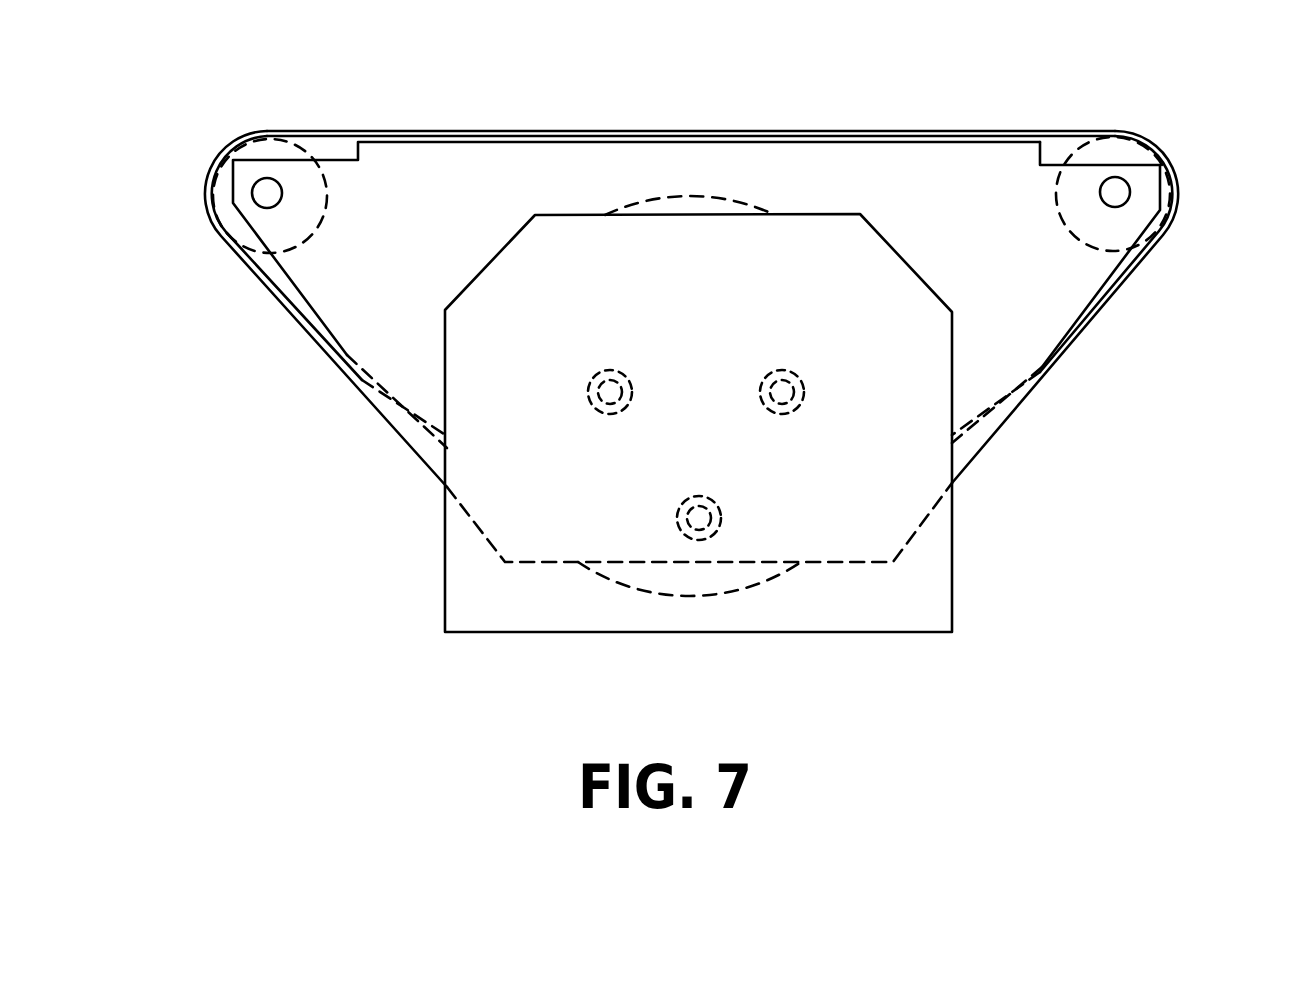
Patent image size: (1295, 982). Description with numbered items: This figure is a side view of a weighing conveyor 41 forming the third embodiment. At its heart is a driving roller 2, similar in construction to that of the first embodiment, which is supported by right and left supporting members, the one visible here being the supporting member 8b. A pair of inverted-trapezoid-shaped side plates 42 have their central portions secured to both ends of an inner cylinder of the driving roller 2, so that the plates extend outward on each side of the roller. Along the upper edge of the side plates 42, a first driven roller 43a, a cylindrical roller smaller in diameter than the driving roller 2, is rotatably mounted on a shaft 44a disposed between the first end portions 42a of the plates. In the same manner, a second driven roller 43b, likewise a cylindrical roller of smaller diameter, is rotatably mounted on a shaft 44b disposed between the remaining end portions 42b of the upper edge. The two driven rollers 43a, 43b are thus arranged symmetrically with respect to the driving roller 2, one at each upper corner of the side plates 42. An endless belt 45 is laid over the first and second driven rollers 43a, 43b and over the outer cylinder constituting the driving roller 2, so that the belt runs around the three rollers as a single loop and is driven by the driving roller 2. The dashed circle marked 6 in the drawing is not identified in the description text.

The weighing conveyor 41 is at (733, 74).
The side plate 42 is at (892, 166).
The first end portion 42a is at (1065, 258).
The remaining end portion 42b is at (380, 292).
The first driven roller 43a is at (1107, 147).
The second driven roller 43b is at (258, 150).
The shaft 44a is at (1120, 192).
The shaft 44b is at (265, 193).
The endless belt 45 is at (316, 133).
The drum 6 is at (667, 203).
The supporting member 8b is at (937, 563).
The driving roller 2 is at (644, 651).